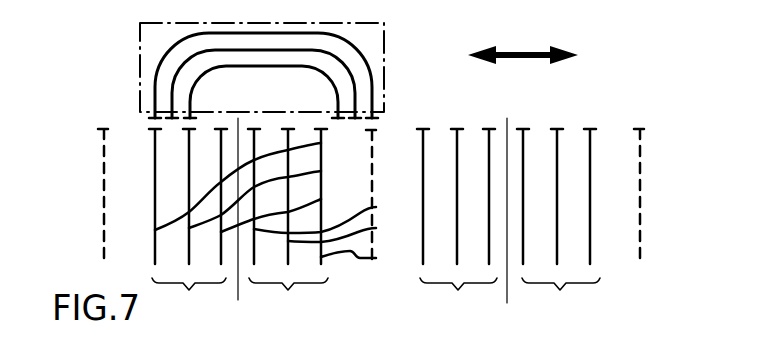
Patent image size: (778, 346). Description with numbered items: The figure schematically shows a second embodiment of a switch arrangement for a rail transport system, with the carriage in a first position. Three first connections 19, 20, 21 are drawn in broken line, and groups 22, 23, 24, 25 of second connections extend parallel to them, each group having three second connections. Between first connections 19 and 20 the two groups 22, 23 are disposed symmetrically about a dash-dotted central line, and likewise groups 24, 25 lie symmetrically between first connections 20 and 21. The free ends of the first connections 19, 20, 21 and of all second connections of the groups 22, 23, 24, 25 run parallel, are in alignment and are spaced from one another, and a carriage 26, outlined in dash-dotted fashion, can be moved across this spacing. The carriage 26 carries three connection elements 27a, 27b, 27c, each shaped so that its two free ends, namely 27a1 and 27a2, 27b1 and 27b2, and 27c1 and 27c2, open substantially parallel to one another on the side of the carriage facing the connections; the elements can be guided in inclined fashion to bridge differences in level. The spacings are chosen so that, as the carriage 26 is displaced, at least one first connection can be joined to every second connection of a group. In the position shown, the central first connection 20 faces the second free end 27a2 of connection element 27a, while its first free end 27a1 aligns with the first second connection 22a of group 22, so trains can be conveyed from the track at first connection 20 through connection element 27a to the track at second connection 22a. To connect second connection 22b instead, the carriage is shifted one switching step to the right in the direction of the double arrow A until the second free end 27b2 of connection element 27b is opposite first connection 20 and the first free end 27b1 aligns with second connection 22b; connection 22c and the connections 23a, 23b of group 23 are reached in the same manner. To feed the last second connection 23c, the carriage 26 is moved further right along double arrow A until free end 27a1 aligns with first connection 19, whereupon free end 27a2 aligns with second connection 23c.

The first connection 19 is at (98, 136).
The first connection 20 is at (380, 137).
The first connection 21 is at (645, 137).
The group of second connections 22 is at (188, 227).
The second connection 22a is at (263, 182).
The second connection 22b is at (281, 193).
The second connection 22c is at (296, 208).
The group of second connections 23 is at (288, 227).
The second connection 23a is at (338, 211).
The second connection 23b is at (356, 227).
The second connection 23c is at (371, 255).
The group of second connections 24 is at (457, 227).
The group of second connections 25 is at (558, 227).
The carriage 26 is at (370, 37).
The connection element 27a is at (157, 73).
The connection element 27b is at (173, 67).
The connection element 27c is at (183, 52).
The first free end of connection element 27a1 is at (153, 100).
The first free end of connection element 27b1 is at (175, 102).
The first free end of connection element 27c1 is at (190, 103).
The second free end of connection element 27a2 is at (372, 118).
The second free end of connection element 27b2 is at (355, 118).
The second free end of connection element 27c2 is at (338, 118).
The double arrow A is at (523, 43).